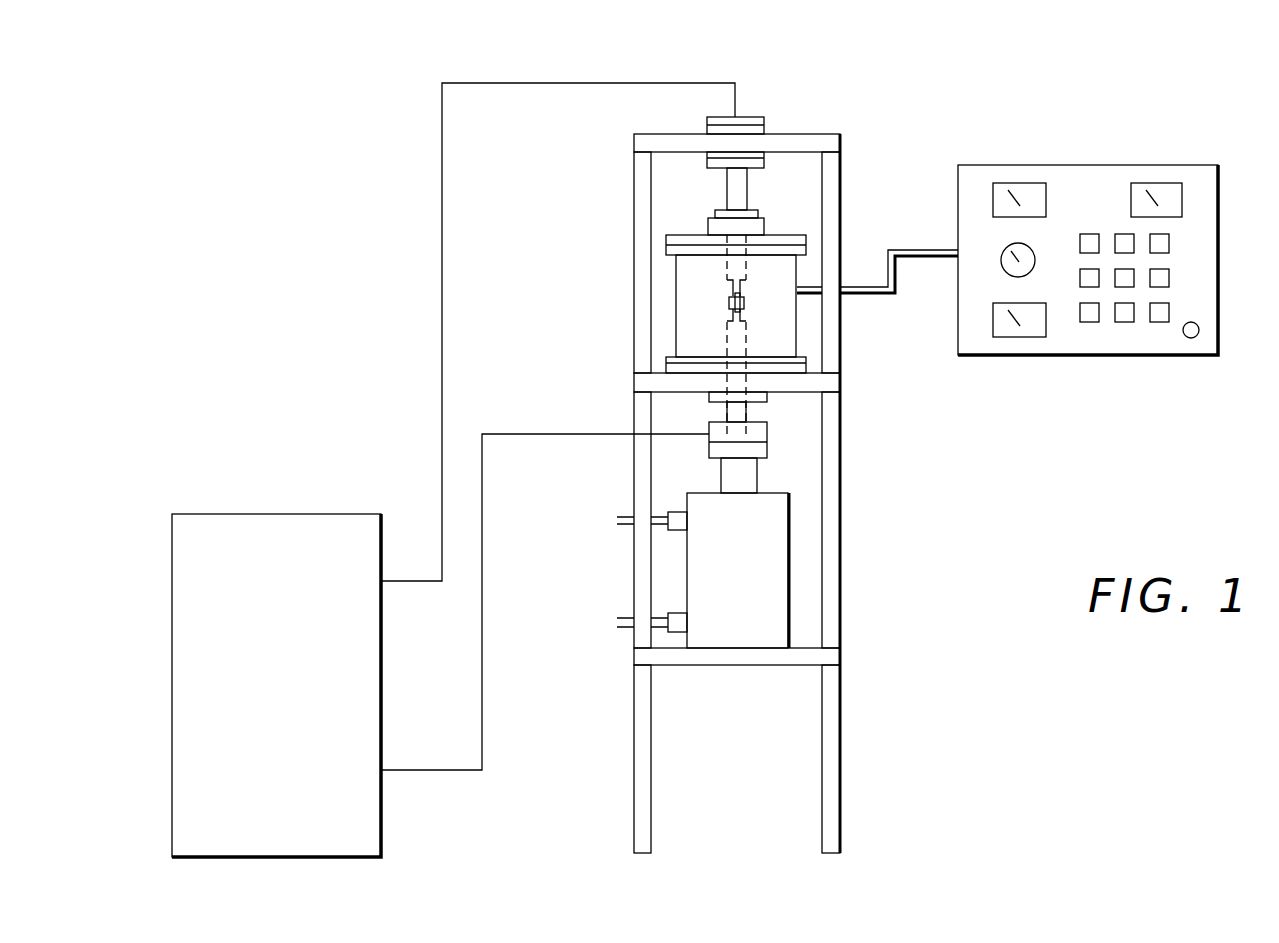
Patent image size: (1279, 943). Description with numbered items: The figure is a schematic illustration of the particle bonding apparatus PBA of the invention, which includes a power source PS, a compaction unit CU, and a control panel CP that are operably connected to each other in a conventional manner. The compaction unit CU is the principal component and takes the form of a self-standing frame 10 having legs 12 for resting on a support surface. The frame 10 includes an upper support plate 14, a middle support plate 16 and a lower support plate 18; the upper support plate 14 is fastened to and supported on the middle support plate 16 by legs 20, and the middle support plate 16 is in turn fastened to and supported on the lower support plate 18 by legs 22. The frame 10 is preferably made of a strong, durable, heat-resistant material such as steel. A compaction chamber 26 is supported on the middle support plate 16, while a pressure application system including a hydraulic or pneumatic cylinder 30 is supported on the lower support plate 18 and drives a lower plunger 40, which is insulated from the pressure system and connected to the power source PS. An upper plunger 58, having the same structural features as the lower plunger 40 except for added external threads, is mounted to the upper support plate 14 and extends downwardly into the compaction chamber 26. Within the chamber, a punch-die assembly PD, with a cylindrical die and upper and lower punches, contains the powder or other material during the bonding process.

The frame 10 is at (735, 448).
The legs 12 is at (845, 780).
The upper support plate 14 is at (645, 133).
The middle support plate 16 is at (637, 383).
The lower support plate 18 is at (637, 655).
The legs 20 is at (840, 217).
The legs 22 is at (845, 582).
The compaction chamber 26 is at (796, 310).
The hydraulic or pneumatic cylinder 30 is at (793, 628).
The lower plunger 40 is at (747, 347).
The upper plunger 58 is at (747, 192).
The power source PS is at (237, 514).
The control panel CP is at (1093, 257).
The compaction unit CU is at (728, 240).
The punch-die assembly PD is at (712, 306).
The particle bonding apparatus PBA is at (318, 193).